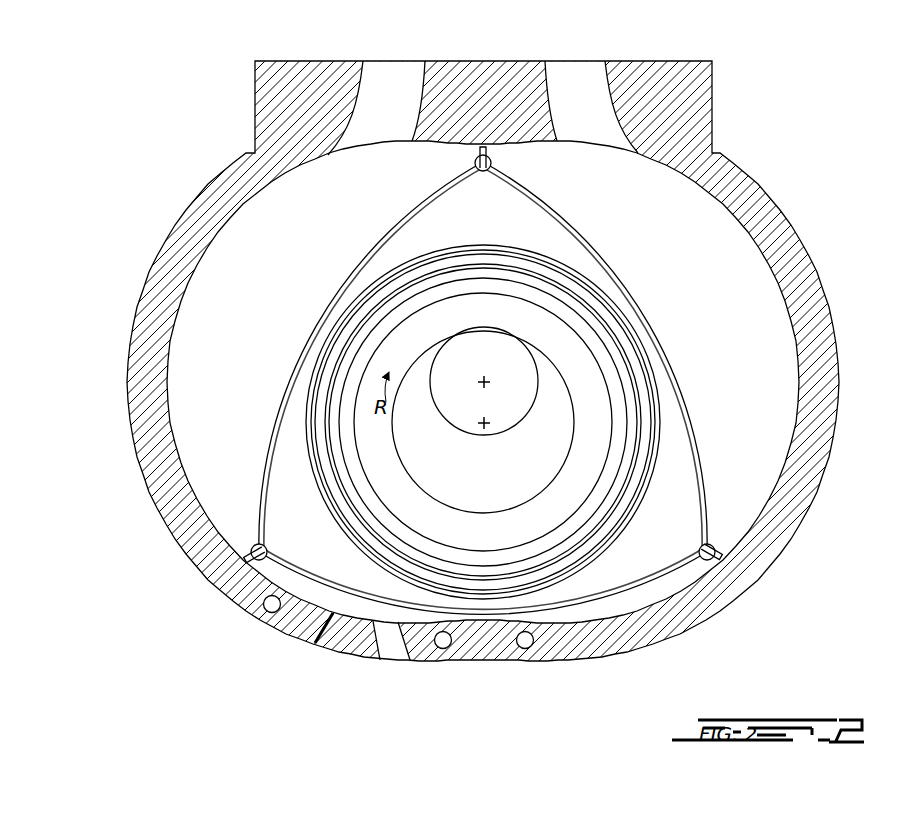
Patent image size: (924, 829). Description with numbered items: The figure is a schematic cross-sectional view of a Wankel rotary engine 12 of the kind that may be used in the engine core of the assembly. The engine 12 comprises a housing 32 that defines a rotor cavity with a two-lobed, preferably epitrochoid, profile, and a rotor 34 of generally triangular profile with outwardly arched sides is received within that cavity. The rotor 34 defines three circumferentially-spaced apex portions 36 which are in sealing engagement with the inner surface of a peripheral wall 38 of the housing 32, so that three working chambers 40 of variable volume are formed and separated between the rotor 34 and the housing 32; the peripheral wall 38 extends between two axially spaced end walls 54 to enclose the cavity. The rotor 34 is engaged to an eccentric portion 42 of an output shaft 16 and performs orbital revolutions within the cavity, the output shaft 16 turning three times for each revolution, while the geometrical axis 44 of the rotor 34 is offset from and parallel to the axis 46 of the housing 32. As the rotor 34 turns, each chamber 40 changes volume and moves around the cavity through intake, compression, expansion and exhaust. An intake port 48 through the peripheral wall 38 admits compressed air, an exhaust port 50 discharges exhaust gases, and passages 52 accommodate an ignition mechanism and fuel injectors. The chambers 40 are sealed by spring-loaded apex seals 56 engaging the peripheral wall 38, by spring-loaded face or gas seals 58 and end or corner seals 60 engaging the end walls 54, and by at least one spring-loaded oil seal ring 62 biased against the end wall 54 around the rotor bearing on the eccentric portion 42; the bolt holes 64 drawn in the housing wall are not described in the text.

The engine 12 is at (188, 158).
The output shaft 16 is at (507, 412).
The housing 32 is at (770, 188).
The rotor 34 is at (696, 400).
The apex portions 36 is at (731, 565).
The peripheral wall 38 is at (805, 280).
The working chambers 40 is at (256, 315).
The eccentric portion 42 is at (506, 492).
The geometrical axis 44 is at (482, 425).
The axis 46 is at (481, 382).
The intake port 48 is at (585, 122).
The exhaust port 50 is at (382, 122).
The passages 52 is at (390, 643).
The end walls 54 is at (774, 437).
The apex seals 56 is at (244, 563).
The face seals 58 is at (270, 474).
The end seals 60 is at (254, 549).
The oil seal ring 62 is at (580, 547).
The bolt hole 64 is at (270, 612).